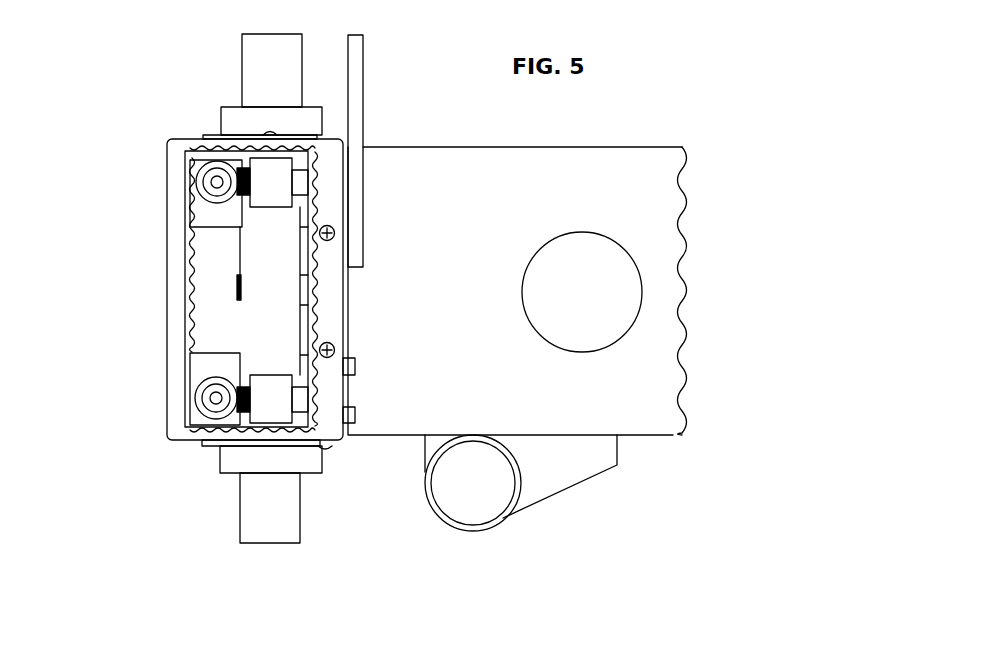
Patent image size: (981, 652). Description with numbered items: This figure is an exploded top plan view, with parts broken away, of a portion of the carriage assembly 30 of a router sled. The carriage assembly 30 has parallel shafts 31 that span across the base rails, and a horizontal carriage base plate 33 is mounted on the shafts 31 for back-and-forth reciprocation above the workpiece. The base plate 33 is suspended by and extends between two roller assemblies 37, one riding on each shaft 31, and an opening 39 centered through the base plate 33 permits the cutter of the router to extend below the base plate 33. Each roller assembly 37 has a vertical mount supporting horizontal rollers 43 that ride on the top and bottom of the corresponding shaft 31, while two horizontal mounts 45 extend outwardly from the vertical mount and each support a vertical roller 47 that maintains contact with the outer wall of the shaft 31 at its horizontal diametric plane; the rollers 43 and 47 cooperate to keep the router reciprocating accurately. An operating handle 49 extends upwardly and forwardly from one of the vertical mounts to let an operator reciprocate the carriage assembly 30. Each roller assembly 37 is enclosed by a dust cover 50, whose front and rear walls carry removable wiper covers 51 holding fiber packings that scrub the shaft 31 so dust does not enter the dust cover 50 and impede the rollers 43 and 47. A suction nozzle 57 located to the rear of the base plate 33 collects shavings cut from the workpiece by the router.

The carriage assembly 30 is at (602, 525).
The shaft 31 is at (238, 507).
The carriage base plate 33 is at (555, 146).
The roller assembly 37 is at (113, 510).
The opening 39 is at (530, 255).
The horizontal roller 43 is at (267, 373).
The horizontal mount 45 is at (195, 215).
The vertical roller 47 is at (198, 170).
The operating handle 49 is at (366, 76).
The dust cover 50 is at (165, 295).
The wiper cover 51 is at (220, 118).
The suction nozzle 57 is at (448, 525).